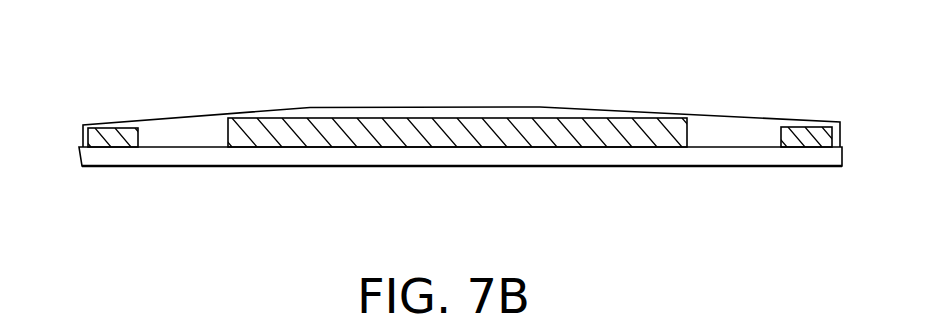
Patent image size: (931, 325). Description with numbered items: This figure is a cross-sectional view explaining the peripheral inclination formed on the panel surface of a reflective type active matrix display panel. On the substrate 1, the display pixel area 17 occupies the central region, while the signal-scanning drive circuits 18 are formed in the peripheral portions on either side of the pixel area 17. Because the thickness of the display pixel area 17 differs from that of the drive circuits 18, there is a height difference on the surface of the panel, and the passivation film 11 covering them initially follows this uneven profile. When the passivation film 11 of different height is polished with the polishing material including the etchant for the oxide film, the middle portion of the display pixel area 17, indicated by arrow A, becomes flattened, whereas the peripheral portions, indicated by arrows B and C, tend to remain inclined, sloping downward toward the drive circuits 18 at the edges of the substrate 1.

The p-type silicon substrate 1 is at (418, 155).
The passivation film 11 is at (545, 108).
The display pixel area 17 is at (298, 125).
The signal-scanning drive circuits 18 is at (117, 132).
The arrow A (middle portion) A is at (433, 85).
The arrow B (peripheral portion) B is at (202, 93).
The arrow C (peripheral portion) C is at (750, 107).